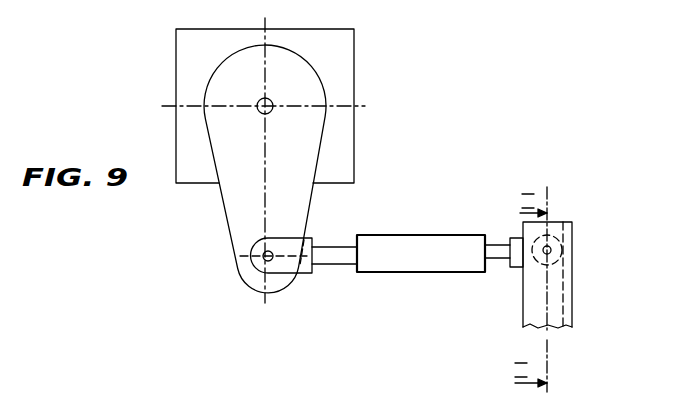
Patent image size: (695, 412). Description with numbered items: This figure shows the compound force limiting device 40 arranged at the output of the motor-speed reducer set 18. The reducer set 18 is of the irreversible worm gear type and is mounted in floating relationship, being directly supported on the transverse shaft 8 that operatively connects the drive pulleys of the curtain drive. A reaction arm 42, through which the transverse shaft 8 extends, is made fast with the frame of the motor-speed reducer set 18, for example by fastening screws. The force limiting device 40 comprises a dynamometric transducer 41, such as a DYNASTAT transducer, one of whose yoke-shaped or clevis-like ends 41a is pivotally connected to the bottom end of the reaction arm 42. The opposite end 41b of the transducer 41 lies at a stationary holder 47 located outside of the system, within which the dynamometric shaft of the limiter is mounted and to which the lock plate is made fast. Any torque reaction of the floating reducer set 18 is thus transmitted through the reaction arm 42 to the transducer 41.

The transverse shaft 8 is at (258, 102).
The motor-speed reducer set 18 is at (343, 85).
The reaction arm 42 is at (245, 150).
The force limiting device 40 is at (385, 200).
The dynamometric transducer 41 is at (427, 252).
The clevis-like end 41a is at (262, 262).
The end of the dynamometric transducer 41b is at (518, 238).
The stationary holder 47 is at (557, 293).